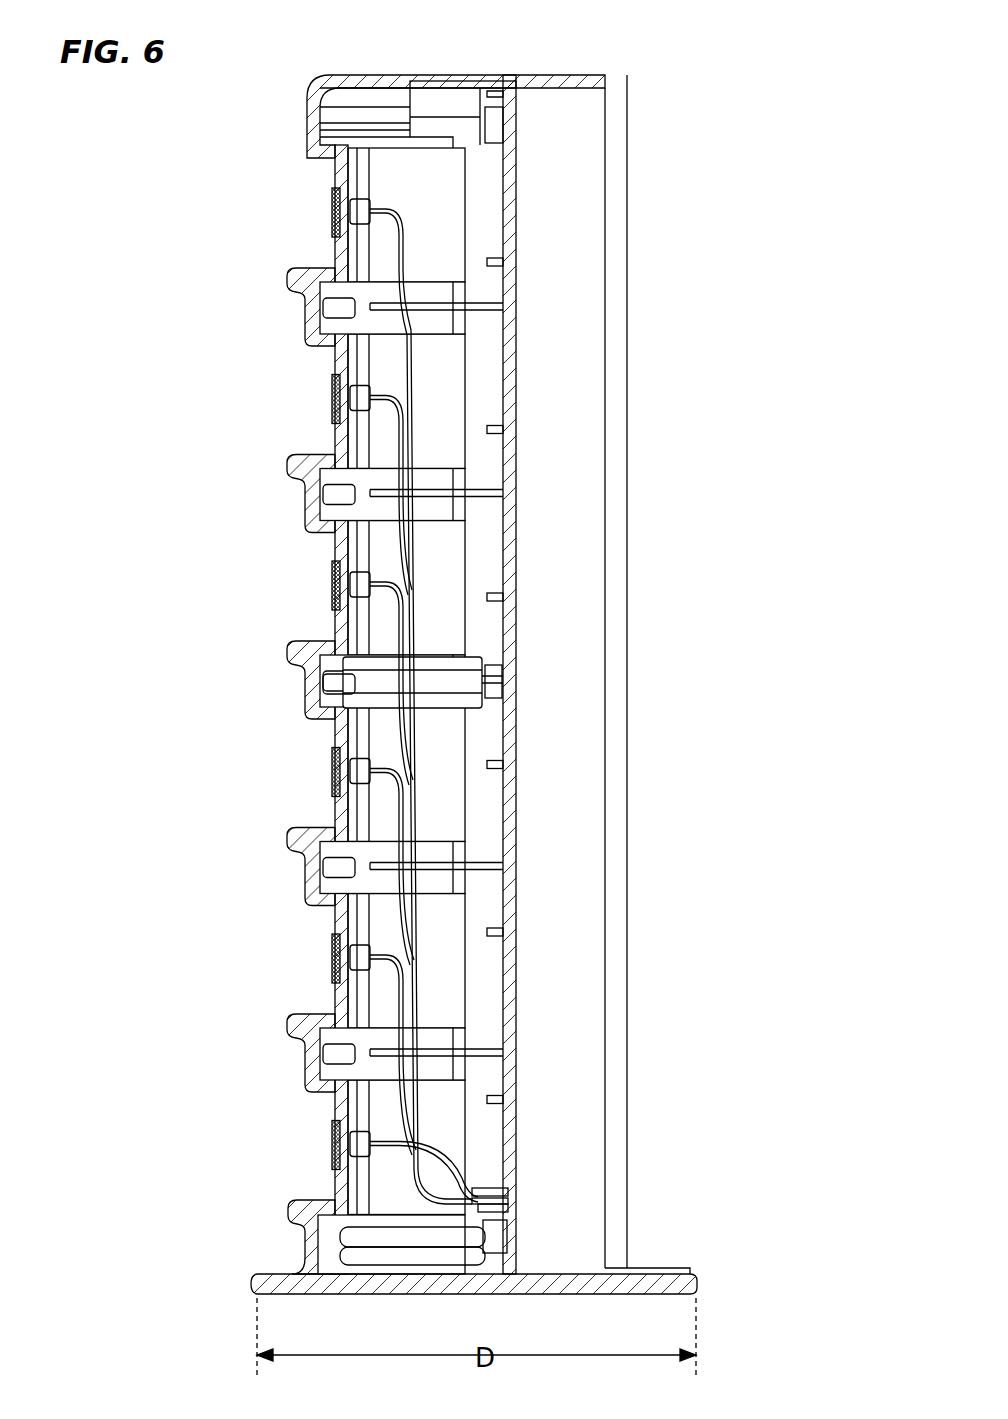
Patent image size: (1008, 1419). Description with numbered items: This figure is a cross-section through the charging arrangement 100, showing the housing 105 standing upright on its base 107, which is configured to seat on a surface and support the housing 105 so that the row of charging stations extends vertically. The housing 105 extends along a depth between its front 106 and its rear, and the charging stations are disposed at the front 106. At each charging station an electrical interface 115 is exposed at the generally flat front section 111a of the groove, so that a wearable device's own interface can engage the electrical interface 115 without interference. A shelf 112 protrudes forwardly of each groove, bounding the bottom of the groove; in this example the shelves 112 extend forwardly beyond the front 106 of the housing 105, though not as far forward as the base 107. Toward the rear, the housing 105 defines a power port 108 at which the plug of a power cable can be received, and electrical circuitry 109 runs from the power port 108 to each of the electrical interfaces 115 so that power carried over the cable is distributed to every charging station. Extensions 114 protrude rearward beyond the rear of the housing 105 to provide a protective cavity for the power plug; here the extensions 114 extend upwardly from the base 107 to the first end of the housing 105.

The charging arrangement 100 is at (662, 147).
The housing 105 is at (404, 75).
The front 106 is at (318, 318).
The base 107 is at (665, 1276).
The power port 108 is at (515, 1200).
The electrical circuitry 109 is at (420, 966).
The front section 111a is at (333, 924).
The shelf 112 is at (300, 268).
The extension 114 is at (575, 259).
The electrical interface 115 is at (333, 208).